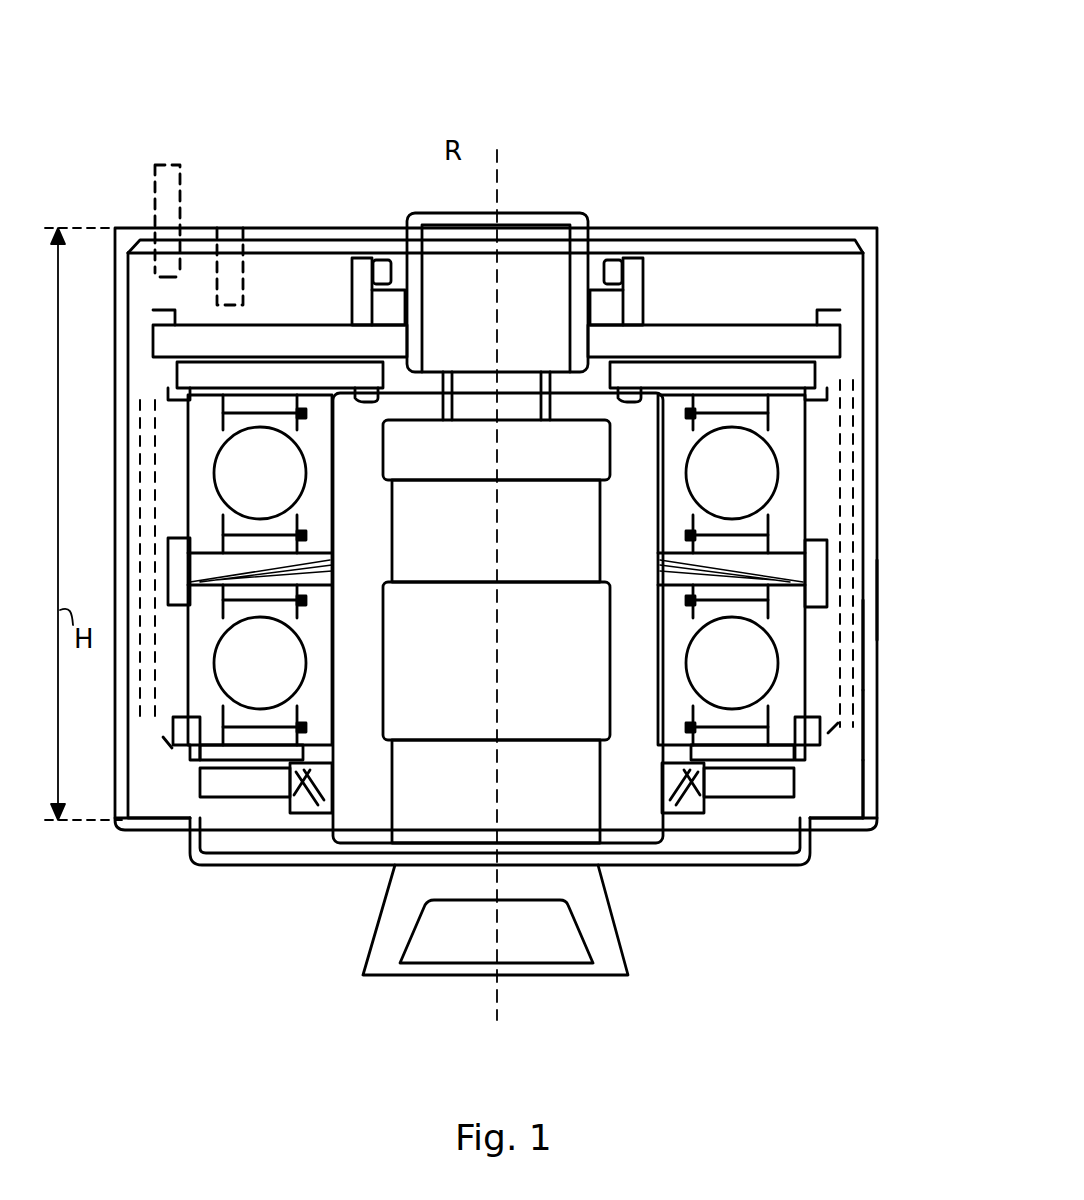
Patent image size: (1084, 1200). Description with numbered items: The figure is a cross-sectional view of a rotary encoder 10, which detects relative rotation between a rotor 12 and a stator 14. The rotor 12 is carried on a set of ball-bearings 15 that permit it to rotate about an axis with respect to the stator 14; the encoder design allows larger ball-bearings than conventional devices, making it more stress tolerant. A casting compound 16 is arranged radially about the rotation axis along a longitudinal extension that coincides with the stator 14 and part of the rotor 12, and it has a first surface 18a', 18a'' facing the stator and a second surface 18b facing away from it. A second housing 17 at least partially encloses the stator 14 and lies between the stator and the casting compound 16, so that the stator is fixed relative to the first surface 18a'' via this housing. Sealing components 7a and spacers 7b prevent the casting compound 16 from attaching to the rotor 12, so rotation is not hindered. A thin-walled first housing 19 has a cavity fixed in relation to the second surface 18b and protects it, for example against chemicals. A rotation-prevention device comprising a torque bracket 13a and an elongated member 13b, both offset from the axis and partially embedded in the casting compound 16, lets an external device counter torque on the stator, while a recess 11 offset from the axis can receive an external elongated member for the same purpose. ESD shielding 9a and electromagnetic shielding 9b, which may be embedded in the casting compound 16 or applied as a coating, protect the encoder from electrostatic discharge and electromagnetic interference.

The rotary encoder 10 is at (236, 75).
The recess 11 is at (232, 228).
The rotor 12 is at (541, 182).
The torque bracket 13a is at (607, 975).
The elongated member 13b is at (168, 165).
The stator 14 is at (712, 318).
The set of ball-bearings 15 is at (235, 478).
The casting compound 16 is at (837, 790).
The second housing 17 is at (840, 600).
The first surface 18a'' is at (906, 632).
The first surface 18a' is at (887, 693).
The second surface 18b is at (860, 745).
The first housing 19 is at (862, 795).
The sealing components 7a is at (623, 260).
The spacers 7b is at (703, 802).
The ESD shielding 9a is at (142, 585).
The electromagnetic shielding 9b is at (466, 553).